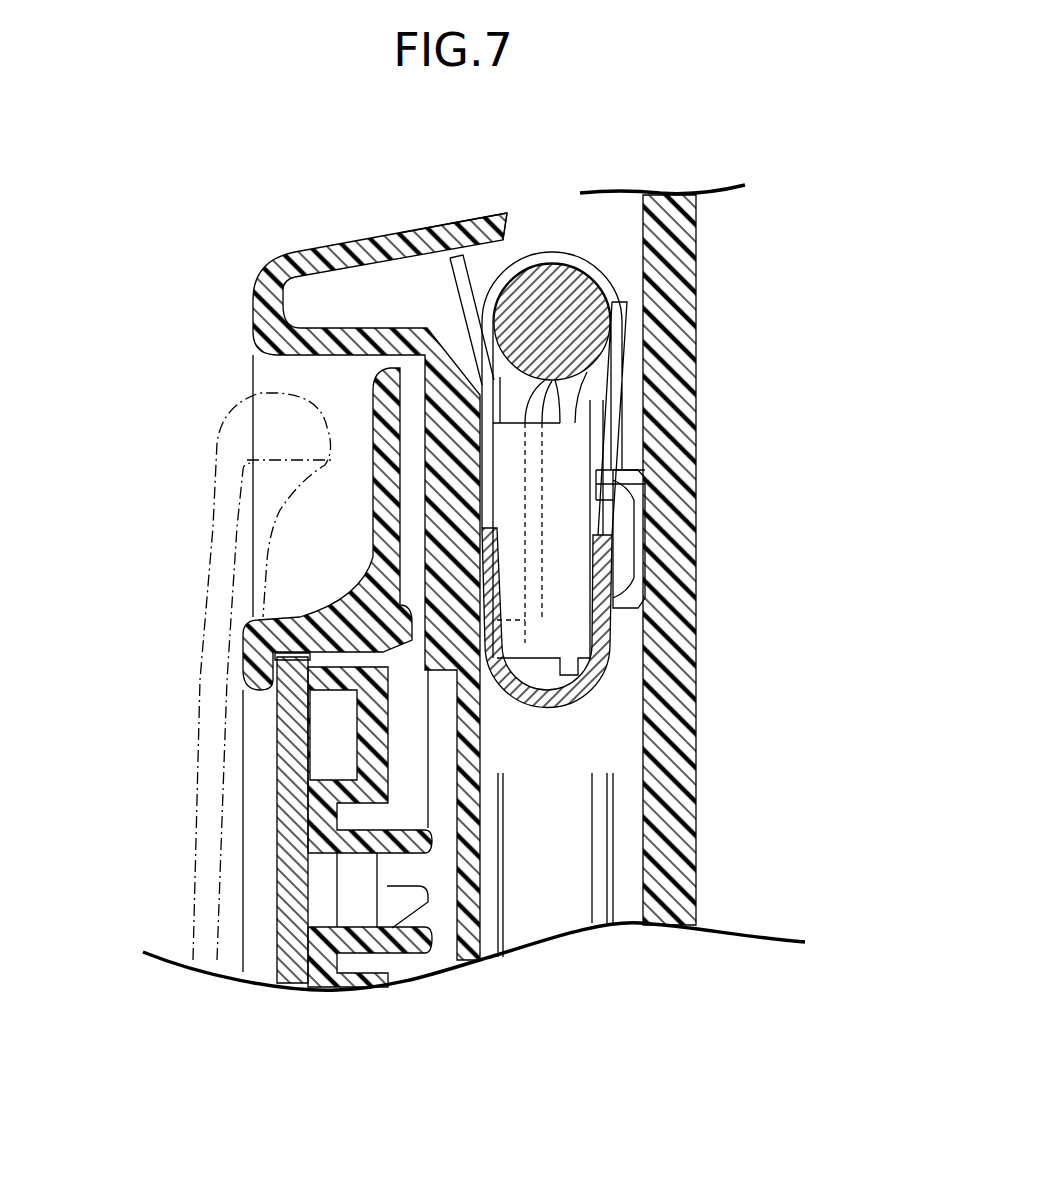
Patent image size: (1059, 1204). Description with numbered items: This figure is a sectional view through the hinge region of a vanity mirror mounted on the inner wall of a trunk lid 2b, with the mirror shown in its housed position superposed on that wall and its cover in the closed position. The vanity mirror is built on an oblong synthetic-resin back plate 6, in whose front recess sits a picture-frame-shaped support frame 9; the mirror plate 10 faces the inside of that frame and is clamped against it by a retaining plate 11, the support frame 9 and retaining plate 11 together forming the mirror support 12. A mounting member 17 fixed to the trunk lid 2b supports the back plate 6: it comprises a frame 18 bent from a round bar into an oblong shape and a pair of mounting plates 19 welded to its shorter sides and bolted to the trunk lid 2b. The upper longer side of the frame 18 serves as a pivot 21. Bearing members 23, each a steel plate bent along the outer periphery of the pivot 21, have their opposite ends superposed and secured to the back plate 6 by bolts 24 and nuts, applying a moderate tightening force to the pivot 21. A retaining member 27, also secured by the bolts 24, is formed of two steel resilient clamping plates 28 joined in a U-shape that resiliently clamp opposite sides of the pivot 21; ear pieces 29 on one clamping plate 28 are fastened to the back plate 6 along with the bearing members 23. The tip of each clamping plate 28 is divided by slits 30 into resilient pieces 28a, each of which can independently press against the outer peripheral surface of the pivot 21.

The trunk lid 2b is at (688, 290).
The back plate 6 is at (414, 233).
The support frame 9 is at (248, 637).
The mirror plate 10 is at (290, 779).
The retaining plate 11 is at (310, 737).
The mirror support 12 is at (266, 677).
The mounting member 17 is at (578, 900).
The frame 18 is at (530, 917).
The mounting plates 19 is at (632, 803).
The pivot 21 is at (552, 298).
The bearing members 23 is at (592, 258).
The bolts 24 is at (628, 540).
The retaining member 27 is at (615, 700).
The resilient clamping plates 28 is at (494, 442).
The resilient pieces 28a is at (476, 325).
The ear pieces 29 is at (540, 570).
The slits 30 is at (493, 513).